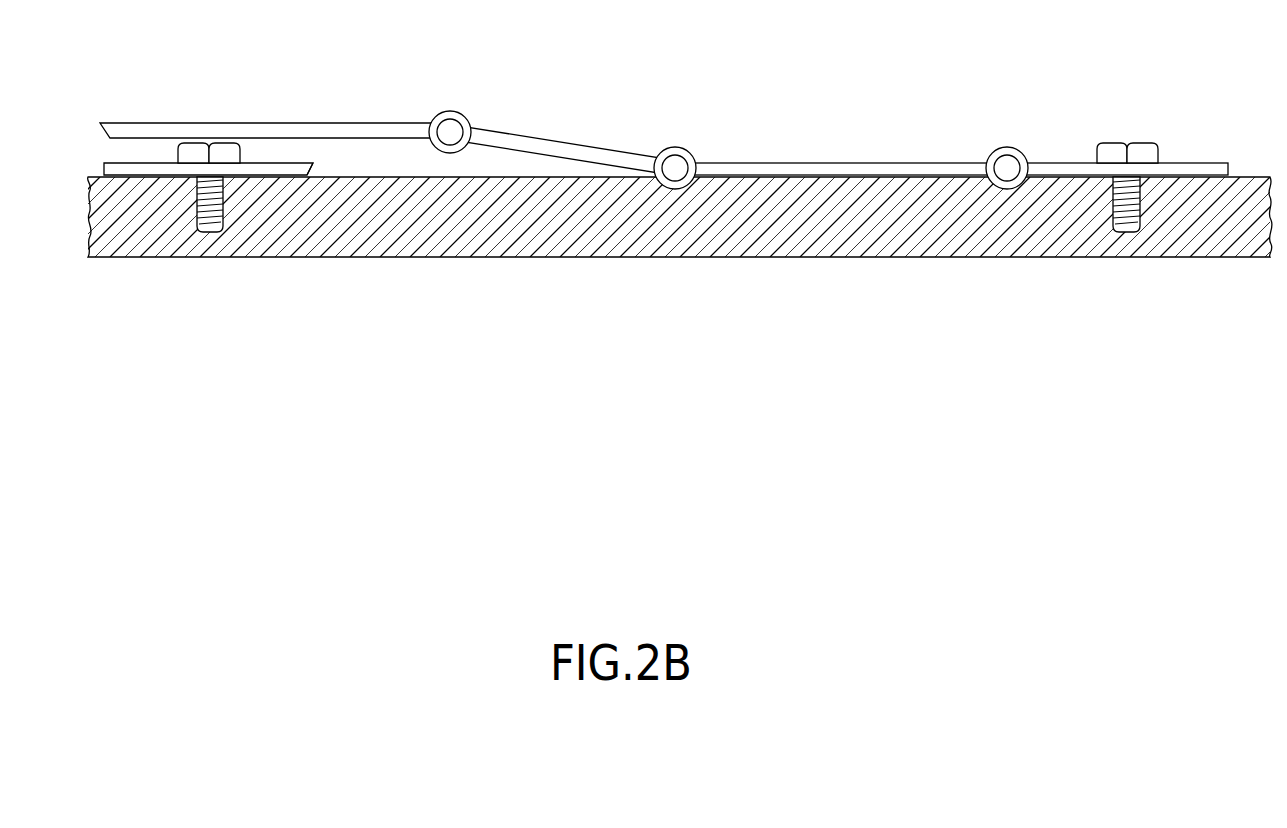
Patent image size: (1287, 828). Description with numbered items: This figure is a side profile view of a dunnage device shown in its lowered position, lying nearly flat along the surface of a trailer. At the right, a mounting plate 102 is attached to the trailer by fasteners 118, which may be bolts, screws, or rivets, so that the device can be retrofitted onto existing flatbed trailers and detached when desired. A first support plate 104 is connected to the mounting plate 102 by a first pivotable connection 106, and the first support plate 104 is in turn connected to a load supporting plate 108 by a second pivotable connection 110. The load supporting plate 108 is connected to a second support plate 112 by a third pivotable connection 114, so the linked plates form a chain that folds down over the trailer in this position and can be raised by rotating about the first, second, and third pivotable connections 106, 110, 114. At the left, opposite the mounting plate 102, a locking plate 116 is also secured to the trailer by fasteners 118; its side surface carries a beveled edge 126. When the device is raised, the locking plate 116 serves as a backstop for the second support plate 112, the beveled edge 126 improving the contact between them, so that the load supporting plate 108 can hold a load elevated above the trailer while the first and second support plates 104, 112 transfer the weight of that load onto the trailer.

The mounting plate 102 is at (1207, 163).
The first support plate 104 is at (848, 163).
The first pivotable connection 106 is at (1012, 147).
The load supporting plate 108 is at (552, 143).
The second pivotable connection 110 is at (680, 147).
The second support plate 112 is at (265, 123).
The third pivotable connection 114 is at (448, 111).
The locking plate 116 is at (104, 170).
The fasteners 118 is at (208, 233).
The beveled edge 126 is at (310, 176).